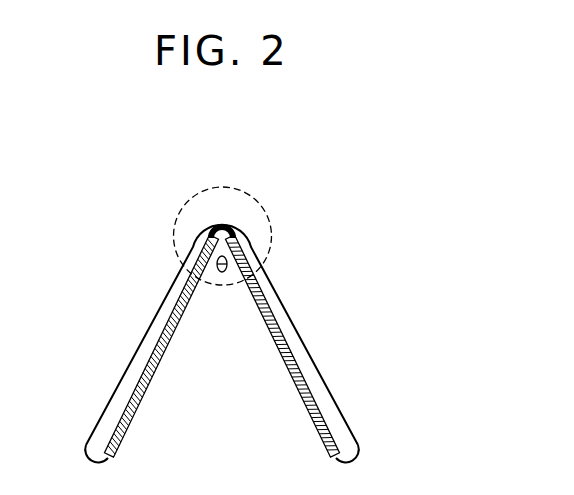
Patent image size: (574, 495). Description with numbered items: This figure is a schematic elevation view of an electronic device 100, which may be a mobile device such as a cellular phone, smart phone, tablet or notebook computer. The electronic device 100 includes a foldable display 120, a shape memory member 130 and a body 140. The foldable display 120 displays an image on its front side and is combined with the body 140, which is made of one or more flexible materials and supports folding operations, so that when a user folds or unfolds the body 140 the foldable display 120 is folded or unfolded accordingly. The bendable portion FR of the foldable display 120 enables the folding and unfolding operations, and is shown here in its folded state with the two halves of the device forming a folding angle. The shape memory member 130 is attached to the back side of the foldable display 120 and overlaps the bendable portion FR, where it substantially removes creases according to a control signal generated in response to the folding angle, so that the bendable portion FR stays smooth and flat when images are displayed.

The electronic device 100 is at (241, 142).
The foldable display 120 is at (323, 433).
The shape memory member 130 is at (238, 222).
The body 140 is at (305, 349).
The bendable portion FR is at (186, 199).